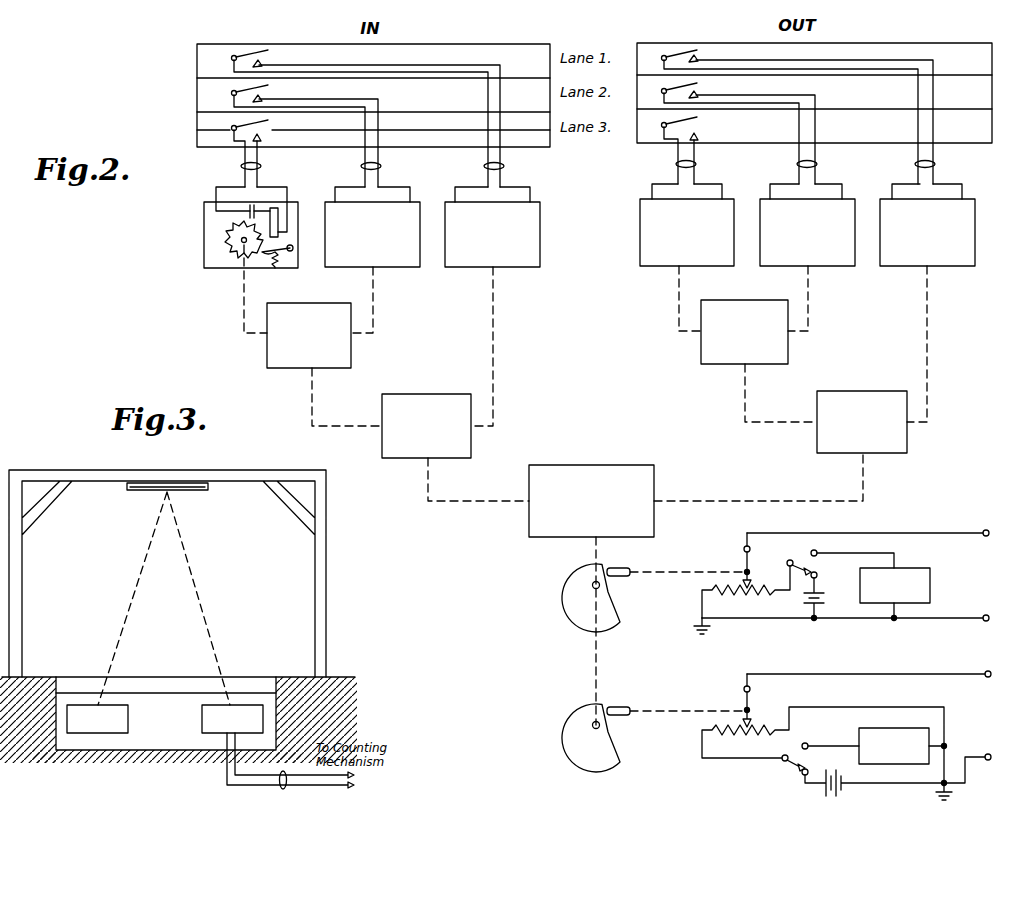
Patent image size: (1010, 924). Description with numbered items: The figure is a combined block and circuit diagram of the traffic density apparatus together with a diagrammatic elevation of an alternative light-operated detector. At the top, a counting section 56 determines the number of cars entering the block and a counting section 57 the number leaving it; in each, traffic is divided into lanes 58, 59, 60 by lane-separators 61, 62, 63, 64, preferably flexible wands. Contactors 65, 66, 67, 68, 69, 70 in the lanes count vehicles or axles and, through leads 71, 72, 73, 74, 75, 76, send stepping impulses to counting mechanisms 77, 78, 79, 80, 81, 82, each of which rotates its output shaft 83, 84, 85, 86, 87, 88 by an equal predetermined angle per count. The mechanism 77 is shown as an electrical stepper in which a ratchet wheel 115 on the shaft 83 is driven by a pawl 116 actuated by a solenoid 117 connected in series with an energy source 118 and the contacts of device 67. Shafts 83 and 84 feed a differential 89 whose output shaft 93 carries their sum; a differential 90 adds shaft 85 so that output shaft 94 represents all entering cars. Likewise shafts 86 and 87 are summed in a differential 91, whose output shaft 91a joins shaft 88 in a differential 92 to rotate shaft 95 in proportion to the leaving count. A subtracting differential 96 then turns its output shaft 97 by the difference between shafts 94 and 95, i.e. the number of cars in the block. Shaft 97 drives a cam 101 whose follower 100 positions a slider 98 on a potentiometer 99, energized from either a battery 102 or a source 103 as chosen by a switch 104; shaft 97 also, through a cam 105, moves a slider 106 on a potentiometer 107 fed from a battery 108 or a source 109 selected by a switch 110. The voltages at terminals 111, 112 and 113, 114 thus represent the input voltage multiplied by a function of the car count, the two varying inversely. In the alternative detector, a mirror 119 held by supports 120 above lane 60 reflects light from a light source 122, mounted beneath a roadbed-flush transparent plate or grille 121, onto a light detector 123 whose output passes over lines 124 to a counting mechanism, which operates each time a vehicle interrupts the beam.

In FIG. 2, the counting section 56 is at (553, 147).
In FIG. 2, the counting section 57 is at (637, 147).
In FIG. 2, the lane 58 is at (208, 60).
In FIG. 2, the lane 59 is at (208, 95).
In FIG. 2, the lane 60 is at (208, 128).
In FIG. 3, the lane 60 is at (281, 677).
In FIG. 2, the lane-separator 61 is at (391, 75).
In FIG. 2, the lane-separator 62 is at (457, 107).
In FIG. 2, the lane-separator 63 is at (950, 76).
In FIG. 2, the lane-separator 64 is at (950, 110).
In FIG. 2, the contactor 65 is at (263, 64).
In FIG. 2, the contactor 66 is at (263, 99).
In FIG. 2, the contactor 67 is at (263, 134).
In FIG. 2, the contactor 68 is at (698, 60).
In FIG. 2, the contactor 69 is at (698, 95).
In FIG. 2, the contactor 70 is at (698, 132).
In FIG. 2, the lead 71 is at (261, 166).
In FIG. 2, the lead 72 is at (381, 166).
In FIG. 2, the lead 73 is at (504, 166).
In FIG. 2, the lead 74 is at (696, 164).
In FIG. 2, the lead 75 is at (817, 164).
In FIG. 2, the lead 76 is at (935, 164).
In FIG. 2, the counting mechanism 77 is at (248, 237).
In FIG. 2, the counting mechanism 78 is at (334, 256).
In FIG. 2, the counting mechanism 79 is at (456, 259).
In FIG. 2, the counting mechanism 80 is at (658, 256).
In FIG. 2, the counting mechanism 81 is at (773, 259).
In FIG. 2, the counting mechanism 82 is at (903, 258).
In FIG. 2, the output shaft 83 is at (243, 296).
In FIG. 2, the output shaft 84 is at (375, 298).
In FIG. 2, the output shaft 85 is at (495, 302).
In FIG. 2, the output shaft 86 is at (677, 298).
In FIG. 2, the output shaft 87 is at (810, 298).
In FIG. 2, the output shaft 88 is at (929, 296).
In FIG. 2, the differential 89 is at (275, 369).
In FIG. 2, the differential 90 is at (428, 394).
In FIG. 2, the differential 91 is at (788, 353).
In FIG. 2, the output shaft 91a is at (747, 395).
In FIG. 2, the differential 92 is at (861, 391).
In FIG. 2, the output shaft 93 is at (315, 399).
In FIG. 2, the output shaft 94 is at (430, 481).
In FIG. 2, the shaft 95 is at (746, 499).
In FIG. 2, the differential 96 is at (594, 465).
In FIG. 2, the output shaft 97 is at (599, 553).
In FIG. 2, the slider 98 is at (745, 571).
In FIG. 2, the potentiometer 99 is at (748, 595).
In FIG. 2, the follower 100 is at (632, 568).
In FIG. 2, the cam 101 is at (571, 581).
In FIG. 2, the battery 102 is at (822, 593).
In FIG. 2, the source 103 is at (917, 568).
In FIG. 2, the switch 104 is at (801, 563).
In FIG. 2, the cam 105 is at (571, 721).
In FIG. 2, the slider 106 is at (745, 709).
In FIG. 2, the potentiometer 107 is at (772, 738).
In FIG. 2, the battery 108 is at (842, 797).
In FIG. 2, the source 109 is at (859, 735).
In FIG. 2, the switch 110 is at (788, 767).
In FIG. 2, the terminal 111 is at (983, 530).
In FIG. 2, the terminal 112 is at (983, 615).
In FIG. 2, the terminal 113 is at (985, 671).
In FIG. 2, the terminal 114 is at (985, 754).
In FIG. 2, the ratchet wheel 115 is at (228, 237).
In FIG. 2, the pawl 116 is at (266, 259).
In FIG. 2, the solenoid 117 is at (278, 216).
In FIG. 2, the electrical energy source 118 is at (247, 209).
In FIG. 3, the mirror 119 is at (210, 490).
In FIG. 3, the support 120 is at (22, 590).
In FIG. 3, the light transparent plate or grille 121 is at (67, 683).
In FIG. 3, the light source 122 is at (127, 718).
In FIG. 3, the light detector 123 is at (202, 722).
In FIG. 3, the lines 124 is at (283, 789).